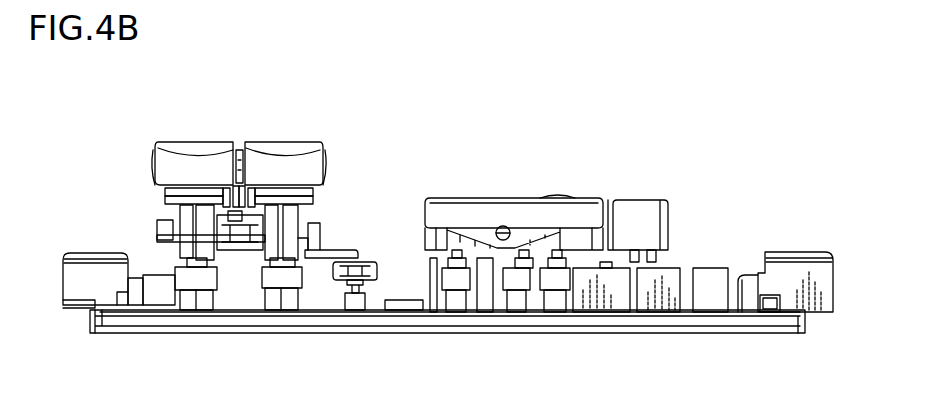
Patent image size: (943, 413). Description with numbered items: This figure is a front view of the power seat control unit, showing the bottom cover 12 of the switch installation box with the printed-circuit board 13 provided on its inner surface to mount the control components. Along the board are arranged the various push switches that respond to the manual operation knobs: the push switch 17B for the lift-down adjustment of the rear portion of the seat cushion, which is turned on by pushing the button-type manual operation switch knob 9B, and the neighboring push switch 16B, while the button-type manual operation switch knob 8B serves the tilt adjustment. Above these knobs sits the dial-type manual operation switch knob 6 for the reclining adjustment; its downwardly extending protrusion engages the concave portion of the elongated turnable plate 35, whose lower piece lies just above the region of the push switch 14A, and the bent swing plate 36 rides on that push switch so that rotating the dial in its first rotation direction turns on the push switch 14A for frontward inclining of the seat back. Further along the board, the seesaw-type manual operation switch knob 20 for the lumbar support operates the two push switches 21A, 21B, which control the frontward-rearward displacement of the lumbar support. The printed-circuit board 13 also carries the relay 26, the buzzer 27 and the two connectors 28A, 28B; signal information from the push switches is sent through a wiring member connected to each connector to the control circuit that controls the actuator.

The dial-type manual operation switch knob 6 is at (213, 175).
The button-type manual operation switch knob 8B is at (305, 160).
The button-type manual operation switch knob 9B is at (180, 160).
The bottom cover 12 is at (652, 336).
The printed-circuit board 13 is at (378, 315).
The push switch 14A is at (355, 305).
The push switch 16B is at (273, 303).
The push switch 17B is at (198, 303).
The seesaw-type manual operation switch knob 20 is at (512, 200).
The push switch 21A is at (550, 303).
The push switch 21B is at (457, 303).
The relay 26 is at (680, 303).
The buzzer 27 is at (400, 300).
The connector 28A is at (90, 252).
The connector 28B is at (798, 252).
The turnable plate 35 is at (333, 250).
The swing plate 36 is at (340, 272).